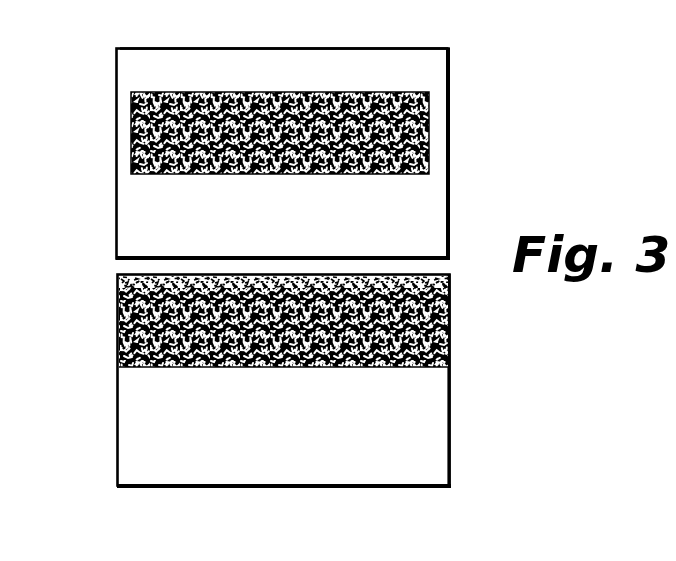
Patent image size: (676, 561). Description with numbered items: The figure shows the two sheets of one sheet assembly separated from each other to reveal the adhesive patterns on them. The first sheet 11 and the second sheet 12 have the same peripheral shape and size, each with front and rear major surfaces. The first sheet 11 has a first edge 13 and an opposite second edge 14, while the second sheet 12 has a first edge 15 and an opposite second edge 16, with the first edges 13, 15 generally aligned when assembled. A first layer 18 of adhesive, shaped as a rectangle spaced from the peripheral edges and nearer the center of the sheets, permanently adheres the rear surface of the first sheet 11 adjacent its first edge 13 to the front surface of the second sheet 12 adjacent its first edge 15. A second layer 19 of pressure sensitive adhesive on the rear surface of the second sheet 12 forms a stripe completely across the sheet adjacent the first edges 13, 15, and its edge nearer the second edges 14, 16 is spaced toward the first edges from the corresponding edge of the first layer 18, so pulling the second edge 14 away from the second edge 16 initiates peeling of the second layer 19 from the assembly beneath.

The first sheet 11 is at (104, 75).
The second sheet 12 is at (107, 431).
The first edge of first sheet 13 is at (229, 48).
The second edge of first sheet 14 is at (448, 254).
The first edge of second sheet 15 is at (160, 276).
The second edge of second sheet 16 is at (314, 487).
The first layer of adhesive 18 is at (131, 146).
The second layer of pressure sensitive adhesive 19 is at (119, 333).